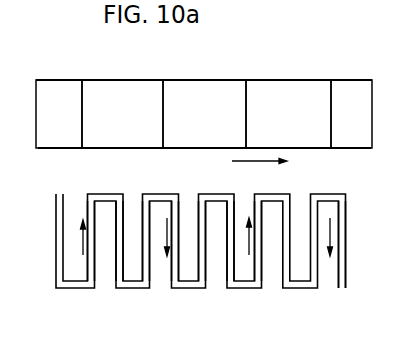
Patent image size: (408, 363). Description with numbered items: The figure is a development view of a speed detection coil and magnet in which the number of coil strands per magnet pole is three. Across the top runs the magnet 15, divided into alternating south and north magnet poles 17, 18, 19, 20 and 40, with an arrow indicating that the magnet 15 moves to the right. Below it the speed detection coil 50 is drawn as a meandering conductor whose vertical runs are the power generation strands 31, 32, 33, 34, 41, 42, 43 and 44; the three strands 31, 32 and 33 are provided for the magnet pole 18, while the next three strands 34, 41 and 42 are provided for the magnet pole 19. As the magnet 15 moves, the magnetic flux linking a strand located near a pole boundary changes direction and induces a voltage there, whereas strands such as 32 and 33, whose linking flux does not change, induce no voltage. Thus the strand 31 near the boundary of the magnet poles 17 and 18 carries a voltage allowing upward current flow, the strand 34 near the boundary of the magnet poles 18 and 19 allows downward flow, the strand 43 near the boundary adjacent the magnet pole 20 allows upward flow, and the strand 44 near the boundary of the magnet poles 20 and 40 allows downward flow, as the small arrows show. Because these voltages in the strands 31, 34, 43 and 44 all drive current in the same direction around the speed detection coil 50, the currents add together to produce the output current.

The magnet 15 is at (259, 80).
The magnet pole 17 is at (55, 82).
The magnet pole 18 is at (120, 83).
The magnet pole 19 is at (205, 82).
The magnet pole 20 is at (299, 85).
The magnet pole 40 is at (367, 85).
The power generation strand 31 is at (87, 270).
The power generation strand 32 is at (117, 270).
The power generation strand 33 is at (144, 270).
The power generation strand 34 is at (175, 270).
The power generation strand 41 is at (203, 267).
The power generation strand 42 is at (230, 265).
The power generation strand 43 is at (258, 265).
The power generation strand 44 is at (343, 265).
The speed detection coil 50 is at (307, 289).